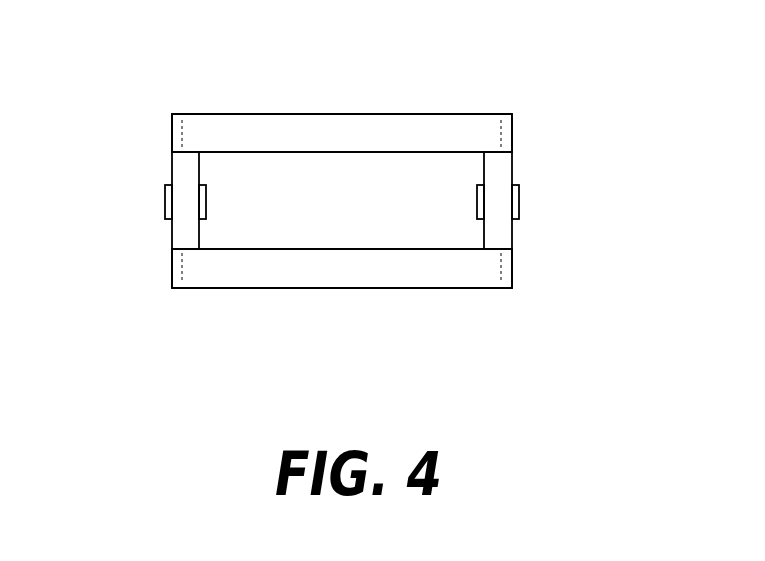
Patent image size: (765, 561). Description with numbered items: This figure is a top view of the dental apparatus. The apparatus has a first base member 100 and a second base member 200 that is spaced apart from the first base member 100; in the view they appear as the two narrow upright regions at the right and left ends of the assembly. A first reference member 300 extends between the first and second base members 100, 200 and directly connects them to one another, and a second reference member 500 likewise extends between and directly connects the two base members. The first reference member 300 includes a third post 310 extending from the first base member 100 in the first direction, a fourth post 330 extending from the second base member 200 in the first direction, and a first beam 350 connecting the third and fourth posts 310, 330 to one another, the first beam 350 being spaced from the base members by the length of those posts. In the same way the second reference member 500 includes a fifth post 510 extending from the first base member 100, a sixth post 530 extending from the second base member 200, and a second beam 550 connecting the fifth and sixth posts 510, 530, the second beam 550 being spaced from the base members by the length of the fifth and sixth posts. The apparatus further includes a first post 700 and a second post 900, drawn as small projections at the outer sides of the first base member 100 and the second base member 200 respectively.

The first base member 100 is at (503, 237).
The second base member 200 is at (180, 242).
The first reference member 300 is at (400, 94).
The third post 310 is at (512, 131).
The fourth post 330 is at (172, 138).
The first beam 350 is at (295, 114).
The second reference member 500 is at (416, 318).
The fifth post 510 is at (512, 272).
The sixth post 530 is at (172, 268).
The second beam 550 is at (302, 288).
The first post 700 is at (519, 198).
The second post 900 is at (165, 197).